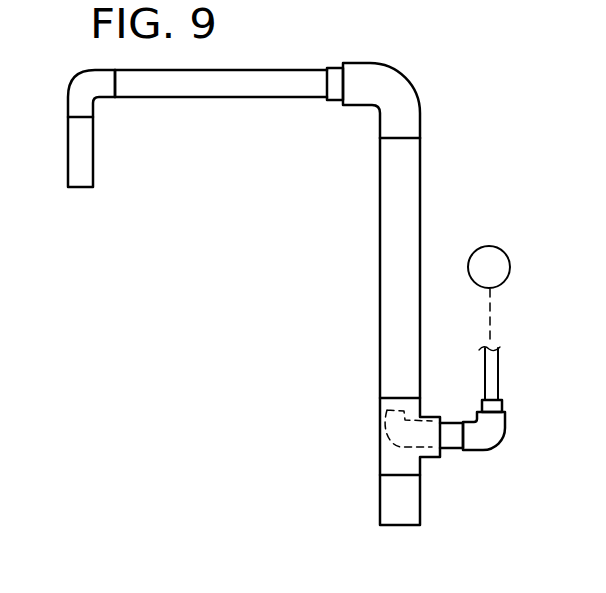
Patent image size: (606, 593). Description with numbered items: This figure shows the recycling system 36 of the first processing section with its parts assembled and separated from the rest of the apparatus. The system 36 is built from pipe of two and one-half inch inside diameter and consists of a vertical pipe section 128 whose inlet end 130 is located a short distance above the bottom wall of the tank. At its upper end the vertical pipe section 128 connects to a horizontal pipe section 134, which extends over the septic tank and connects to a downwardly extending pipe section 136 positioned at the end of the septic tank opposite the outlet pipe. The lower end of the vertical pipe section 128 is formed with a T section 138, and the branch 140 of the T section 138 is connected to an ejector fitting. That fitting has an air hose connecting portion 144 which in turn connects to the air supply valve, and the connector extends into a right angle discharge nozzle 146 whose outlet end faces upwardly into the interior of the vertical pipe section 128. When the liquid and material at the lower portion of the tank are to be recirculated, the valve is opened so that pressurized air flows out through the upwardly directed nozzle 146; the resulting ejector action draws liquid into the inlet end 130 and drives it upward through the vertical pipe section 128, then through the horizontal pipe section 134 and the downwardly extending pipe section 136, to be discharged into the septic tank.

The recycling system 36 is at (360, 300).
The vertical pipe section 128 is at (408, 188).
The inlet end 130 is at (393, 525).
The horizontal pipe section 134 is at (212, 87).
The downwardly extending pipe section 136 is at (85, 157).
The T section 138 is at (385, 463).
The branch 140 is at (428, 460).
The air hose connecting portion 144 is at (490, 432).
The right angle discharge nozzle 146 is at (385, 407).